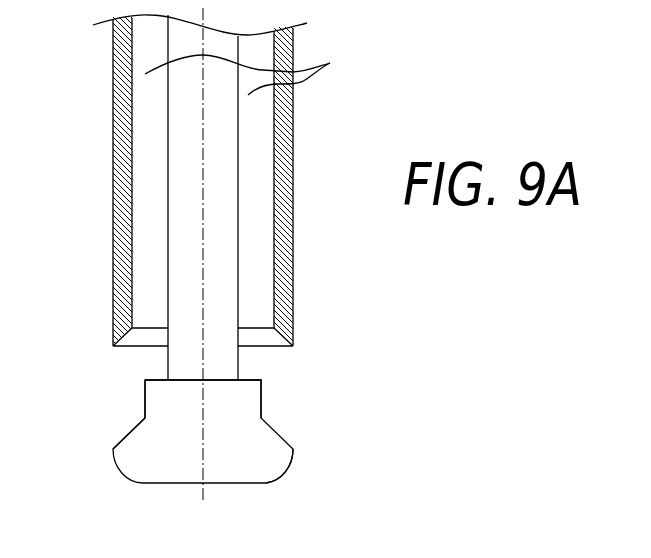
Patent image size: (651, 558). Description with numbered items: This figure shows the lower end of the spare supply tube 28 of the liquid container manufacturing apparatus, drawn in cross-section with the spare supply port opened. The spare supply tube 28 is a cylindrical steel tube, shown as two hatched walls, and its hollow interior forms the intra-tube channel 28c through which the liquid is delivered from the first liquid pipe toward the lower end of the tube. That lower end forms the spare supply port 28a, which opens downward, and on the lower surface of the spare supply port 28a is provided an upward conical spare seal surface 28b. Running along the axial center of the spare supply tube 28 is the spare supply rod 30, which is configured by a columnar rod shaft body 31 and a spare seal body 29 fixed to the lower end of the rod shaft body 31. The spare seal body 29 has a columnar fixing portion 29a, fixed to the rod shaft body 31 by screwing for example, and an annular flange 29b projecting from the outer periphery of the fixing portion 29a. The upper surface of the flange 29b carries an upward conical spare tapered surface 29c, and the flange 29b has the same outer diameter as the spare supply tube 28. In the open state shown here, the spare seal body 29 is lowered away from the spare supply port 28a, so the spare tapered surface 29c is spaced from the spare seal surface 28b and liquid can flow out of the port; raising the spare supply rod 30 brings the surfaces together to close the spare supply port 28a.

The spare supply tube 28 is at (110, 152).
The spare supply port 28a is at (127, 328).
The spare seal surface 28b is at (128, 340).
The intra-tube channel 28c is at (255, 73).
The spare seal body 29 is at (201, 450).
The fixing portion 29a is at (248, 400).
The flange 29b is at (278, 460).
The spare tapered surface 29c is at (124, 438).
The spare supply rod 30 is at (164, 264).
The rod shaft body 31 is at (178, 222).